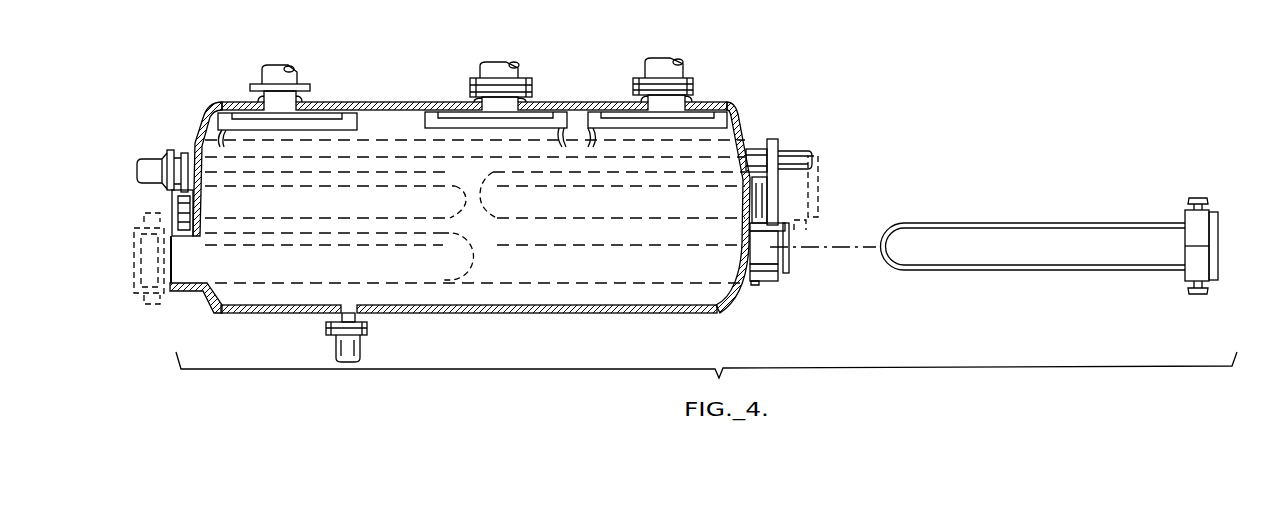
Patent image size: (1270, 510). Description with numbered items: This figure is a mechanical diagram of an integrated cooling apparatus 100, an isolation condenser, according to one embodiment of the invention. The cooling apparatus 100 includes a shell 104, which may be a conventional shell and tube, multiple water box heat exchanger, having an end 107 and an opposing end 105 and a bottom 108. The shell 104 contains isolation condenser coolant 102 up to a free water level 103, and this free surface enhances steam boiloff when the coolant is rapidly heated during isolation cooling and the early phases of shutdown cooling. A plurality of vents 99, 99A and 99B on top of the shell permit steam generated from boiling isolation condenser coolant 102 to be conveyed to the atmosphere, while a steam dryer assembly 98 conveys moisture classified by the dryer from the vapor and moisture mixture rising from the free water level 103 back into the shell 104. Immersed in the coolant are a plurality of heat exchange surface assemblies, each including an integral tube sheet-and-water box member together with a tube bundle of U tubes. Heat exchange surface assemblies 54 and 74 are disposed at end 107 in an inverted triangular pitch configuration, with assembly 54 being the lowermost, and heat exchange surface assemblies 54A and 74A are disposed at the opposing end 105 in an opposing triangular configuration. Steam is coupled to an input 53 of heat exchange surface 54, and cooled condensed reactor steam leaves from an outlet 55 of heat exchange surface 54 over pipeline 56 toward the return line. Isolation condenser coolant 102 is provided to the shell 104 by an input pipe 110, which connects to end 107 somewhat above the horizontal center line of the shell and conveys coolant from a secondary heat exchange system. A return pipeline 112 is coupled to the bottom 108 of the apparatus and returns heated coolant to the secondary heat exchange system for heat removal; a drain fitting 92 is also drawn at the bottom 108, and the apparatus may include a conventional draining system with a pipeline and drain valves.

The cooling apparatus 100 is at (797, 89).
The end of shell 107 is at (731, 101).
The shell 104 is at (747, 124).
The opposing end of shell 105 is at (198, 133).
The bottom of apparatus 108 is at (500, 313).
The isolation condenser coolant 102 is at (716, 154).
The steam dryer assembly 98 is at (430, 112).
The free water level 103 is at (573, 142).
The vent 99A is at (294, 66).
The vent 99 is at (518, 66).
The vent 99B is at (681, 63).
The drain fitting 92 is at (367, 326).
The return pipeline 112 is at (361, 345).
The heat exchange surface assembly 74A is at (148, 202).
The heat exchange surface assembly 54A is at (134, 284).
The input pipe 110 is at (808, 150).
The heat exchange surface assembly 74 is at (820, 204).
The heat exchange surface 54 is at (1038, 222).
The pipeline 56 is at (1220, 238).
The input of heat exchange surface 53 is at (1203, 197).
The outlet of heat exchange surface 55 is at (1200, 293).